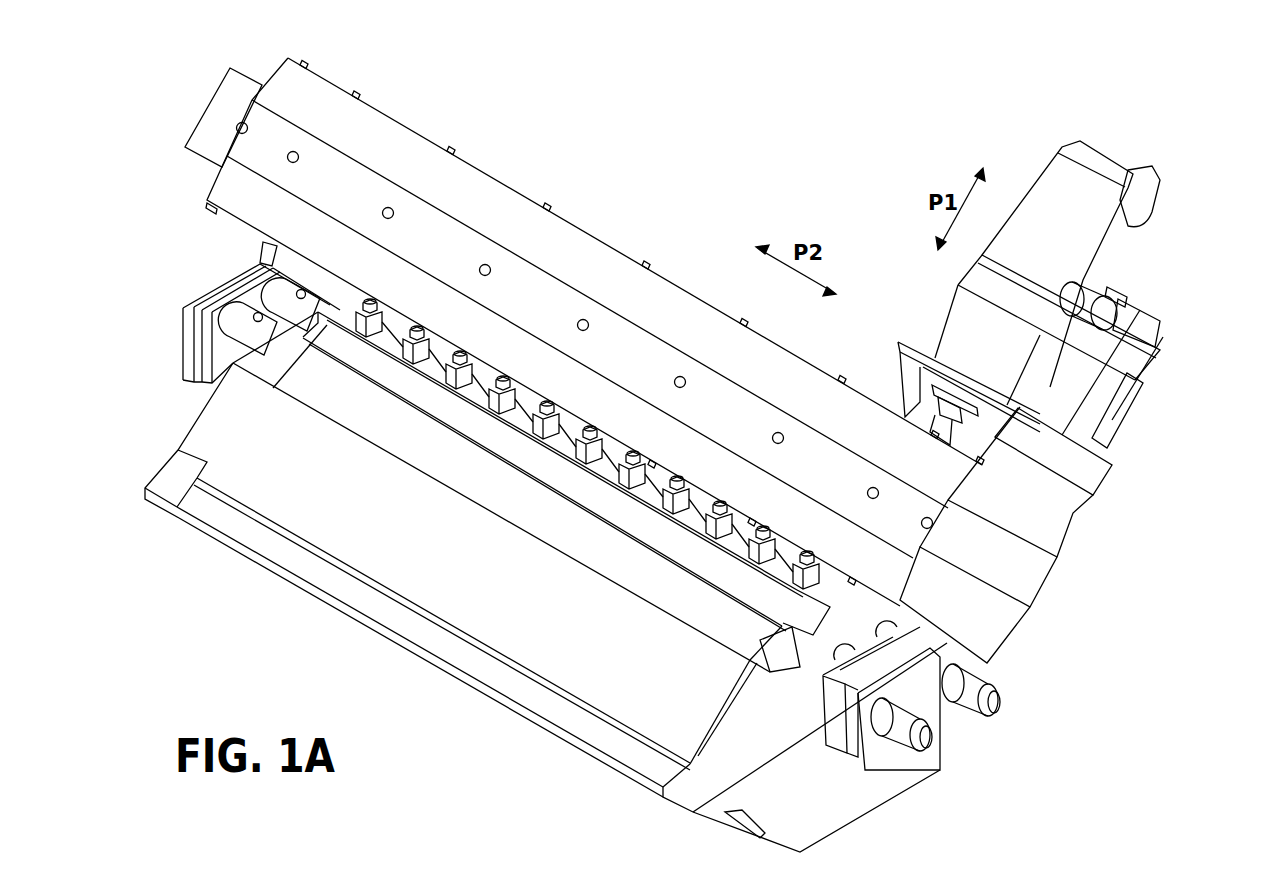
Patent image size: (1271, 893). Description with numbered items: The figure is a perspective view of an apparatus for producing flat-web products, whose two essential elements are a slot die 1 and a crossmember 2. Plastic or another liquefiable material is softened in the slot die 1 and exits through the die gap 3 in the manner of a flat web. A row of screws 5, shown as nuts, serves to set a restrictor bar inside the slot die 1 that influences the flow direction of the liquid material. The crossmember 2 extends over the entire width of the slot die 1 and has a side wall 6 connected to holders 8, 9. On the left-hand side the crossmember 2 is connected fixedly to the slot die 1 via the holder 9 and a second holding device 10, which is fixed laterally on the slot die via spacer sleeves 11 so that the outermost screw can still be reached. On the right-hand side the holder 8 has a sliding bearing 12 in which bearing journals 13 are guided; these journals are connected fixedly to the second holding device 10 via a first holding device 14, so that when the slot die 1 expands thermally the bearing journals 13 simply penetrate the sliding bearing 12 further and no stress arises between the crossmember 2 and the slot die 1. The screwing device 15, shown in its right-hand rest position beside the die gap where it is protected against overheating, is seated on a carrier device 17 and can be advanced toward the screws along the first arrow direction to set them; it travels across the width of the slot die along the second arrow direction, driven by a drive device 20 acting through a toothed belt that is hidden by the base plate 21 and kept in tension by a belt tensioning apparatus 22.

The slot die 1 is at (348, 612).
The crossmember 2 is at (630, 253).
The die gap 3 is at (238, 548).
The screws 5 is at (463, 343).
The side wall 6 is at (987, 615).
The holder 8 is at (945, 712).
The holder 9 is at (267, 253).
The second holding device 10 is at (220, 342).
The spacer sleeves 11 is at (243, 317).
The sliding bearing 12 is at (980, 677).
The bearing journals 13 is at (1003, 703).
The first holding device 14 is at (835, 745).
The screwing device 15 is at (1150, 180).
The carrier device 17 is at (907, 373).
The drive device 20 is at (1117, 412).
The base plate 21 is at (483, 203).
The belt tensioning apparatus 22 is at (222, 115).